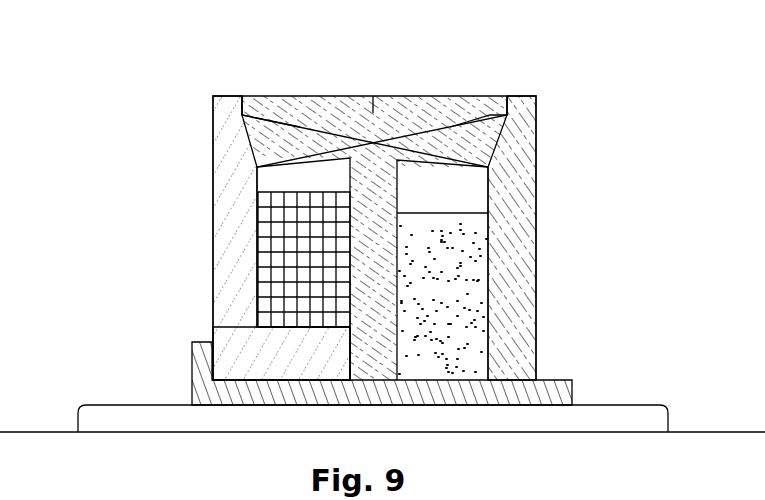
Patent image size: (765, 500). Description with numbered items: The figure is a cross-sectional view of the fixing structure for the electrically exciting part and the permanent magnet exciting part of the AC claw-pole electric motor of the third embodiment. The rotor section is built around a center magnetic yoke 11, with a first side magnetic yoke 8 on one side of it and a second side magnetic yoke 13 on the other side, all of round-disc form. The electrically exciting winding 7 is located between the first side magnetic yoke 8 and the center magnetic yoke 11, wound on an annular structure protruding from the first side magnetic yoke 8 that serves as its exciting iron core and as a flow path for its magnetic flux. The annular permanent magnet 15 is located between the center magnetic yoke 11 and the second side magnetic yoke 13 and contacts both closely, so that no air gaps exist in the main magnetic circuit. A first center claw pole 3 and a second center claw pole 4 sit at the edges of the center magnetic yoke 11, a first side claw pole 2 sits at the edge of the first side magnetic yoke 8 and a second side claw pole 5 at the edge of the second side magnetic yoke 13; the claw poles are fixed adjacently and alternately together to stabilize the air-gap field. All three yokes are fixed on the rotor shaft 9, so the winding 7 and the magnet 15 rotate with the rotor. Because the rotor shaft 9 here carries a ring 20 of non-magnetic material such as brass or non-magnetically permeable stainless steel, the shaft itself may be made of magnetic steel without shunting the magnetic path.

The first side claw pole 2 is at (367, 107).
The first center claw pole 3 is at (253, 107).
The second center claw pole 4 is at (495, 107).
The second side claw pole 5 is at (378, 108).
The electrically exciting winding 7 is at (272, 250).
The first side magnetic yoke 8 is at (222, 187).
The rotor shaft 9 is at (143, 420).
The center magnetic yoke 11 is at (373, 360).
The second side magnetic yoke 13 is at (522, 162).
The annular permanent magnet 15 is at (460, 297).
The ring 20 is at (562, 390).